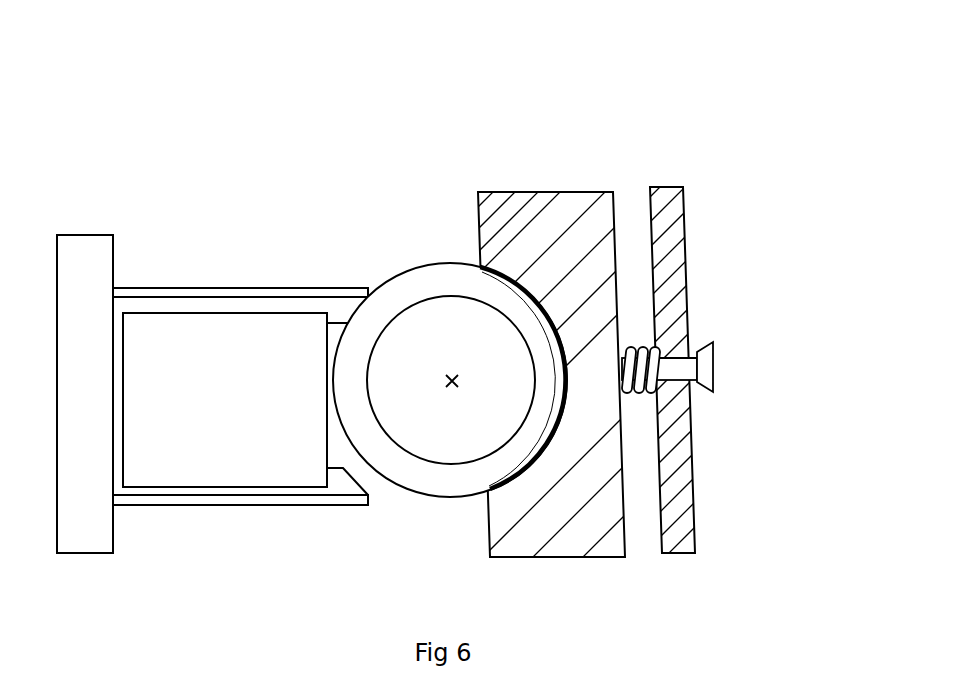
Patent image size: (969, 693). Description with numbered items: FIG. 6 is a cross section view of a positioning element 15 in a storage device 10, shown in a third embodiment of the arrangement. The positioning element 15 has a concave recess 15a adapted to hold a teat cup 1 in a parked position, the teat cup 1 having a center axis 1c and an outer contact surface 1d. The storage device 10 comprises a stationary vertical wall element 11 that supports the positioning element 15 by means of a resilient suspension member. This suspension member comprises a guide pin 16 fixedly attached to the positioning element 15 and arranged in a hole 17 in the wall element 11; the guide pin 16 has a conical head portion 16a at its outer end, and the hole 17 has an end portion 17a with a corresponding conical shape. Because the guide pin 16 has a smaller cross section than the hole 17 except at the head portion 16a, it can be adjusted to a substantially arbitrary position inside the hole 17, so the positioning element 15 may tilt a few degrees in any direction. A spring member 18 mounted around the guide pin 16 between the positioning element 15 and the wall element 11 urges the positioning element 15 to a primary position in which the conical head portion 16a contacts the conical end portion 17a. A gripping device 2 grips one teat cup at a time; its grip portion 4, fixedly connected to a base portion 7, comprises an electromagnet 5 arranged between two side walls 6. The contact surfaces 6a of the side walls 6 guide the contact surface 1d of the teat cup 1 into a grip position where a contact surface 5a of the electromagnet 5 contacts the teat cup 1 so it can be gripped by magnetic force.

The teat cup 1 is at (450, 377).
The center axis 1c is at (450, 390).
The outer surface 1d is at (335, 375).
The gripping device 2 is at (182, 172).
The grip portion 4 is at (240, 363).
The electromagnet 5 is at (225, 445).
The contact surface of the electromagnet 5a is at (323, 398).
The side walls 6 is at (213, 288).
The contact surfaces 6a is at (352, 308).
The base portion 7 is at (82, 280).
The storage device 10 is at (630, 162).
The stationary vertical wall element 11 is at (670, 268).
The positioning element 15 is at (575, 512).
The concave recess 15a is at (525, 287).
The guide pin 16 is at (708, 381).
The head portion 16a is at (708, 345).
The hole 17 is at (686, 389).
The end portion 17a is at (676, 386).
The spring member 18 is at (637, 393).